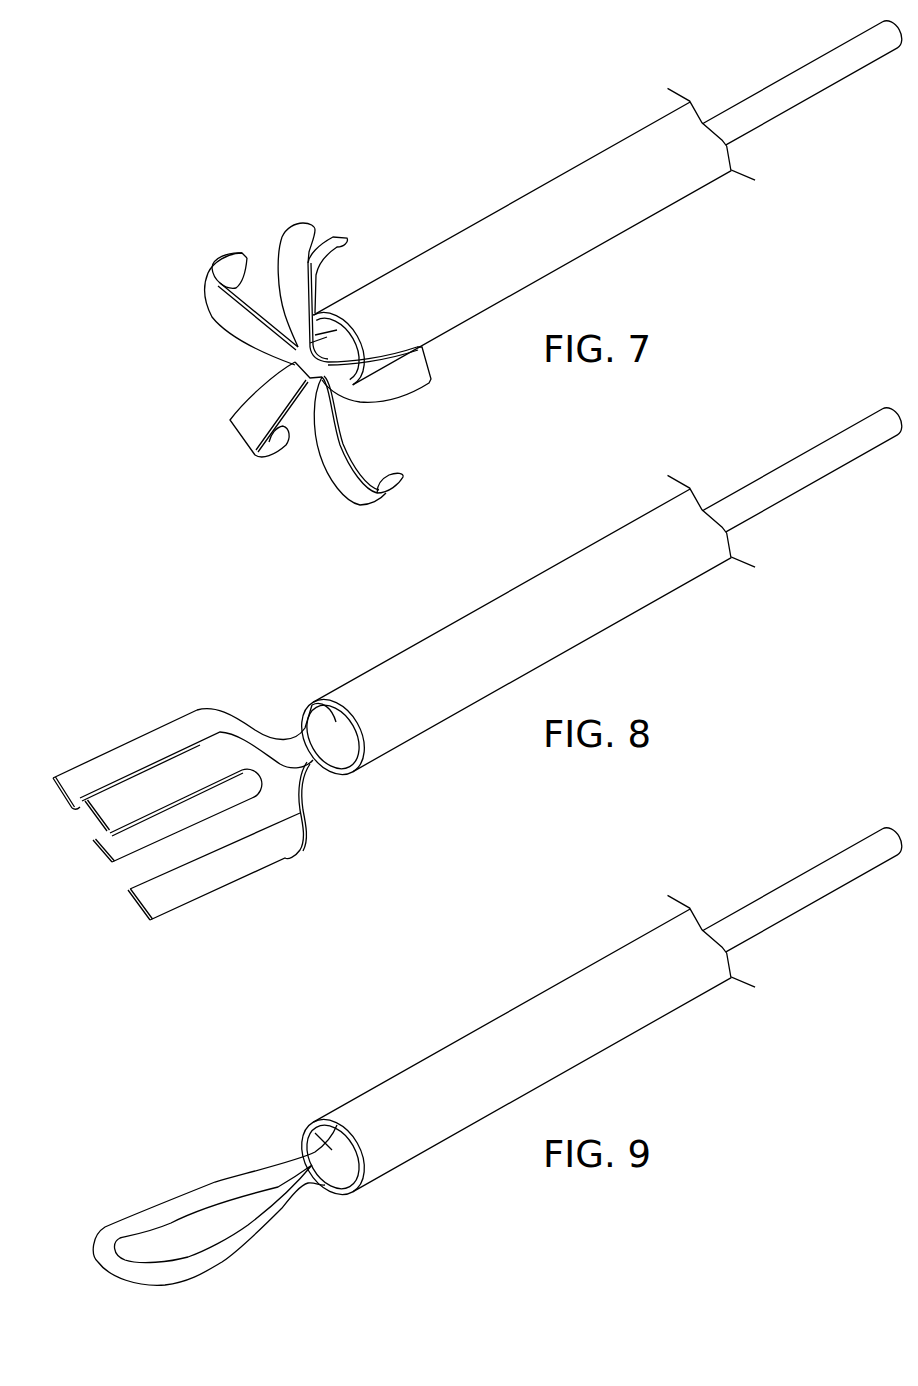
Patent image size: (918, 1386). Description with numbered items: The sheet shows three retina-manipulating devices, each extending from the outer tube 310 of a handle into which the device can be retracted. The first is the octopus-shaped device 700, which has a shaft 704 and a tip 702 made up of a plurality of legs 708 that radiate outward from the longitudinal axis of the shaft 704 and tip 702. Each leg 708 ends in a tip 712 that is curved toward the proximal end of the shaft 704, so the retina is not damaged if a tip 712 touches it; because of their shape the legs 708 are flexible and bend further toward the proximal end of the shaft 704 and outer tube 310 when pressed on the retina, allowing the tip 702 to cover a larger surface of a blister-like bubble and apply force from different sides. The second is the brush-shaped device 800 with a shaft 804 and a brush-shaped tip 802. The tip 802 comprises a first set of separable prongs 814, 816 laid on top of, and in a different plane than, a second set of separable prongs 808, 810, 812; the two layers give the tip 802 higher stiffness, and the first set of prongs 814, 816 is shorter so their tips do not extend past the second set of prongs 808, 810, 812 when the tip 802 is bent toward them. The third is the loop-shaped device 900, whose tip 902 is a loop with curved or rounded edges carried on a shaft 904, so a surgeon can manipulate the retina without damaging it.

In FIG. 7, the outer tube 310 is at (462, 245).
In FIG. 8, the outer tube 310 is at (462, 633).
In FIG. 9, the outer tube 310 is at (462, 1052).
In FIG. 7, the shaft 704 is at (738, 101).
In FIG. 7, the tip 702 is at (263, 220).
In FIG. 7, the device 700 is at (308, 364).
In FIG. 7, the legs 708 is at (305, 240).
In FIG. 7, the tip (of leg) 712 is at (333, 230).
In FIG. 8, the shaft 804 is at (738, 488).
In FIG. 8, the brush-shaped tip 802 is at (178, 773).
In FIG. 8, the device 800 is at (330, 727).
In FIG. 8, the separable prong (second set) 808 is at (67, 787).
In FIG. 8, the separable prong (second set) 810 is at (107, 847).
In FIG. 8, the separable prong (second set) 812 is at (143, 902).
In FIG. 8, the separable prong (first set) 814 is at (137, 787).
In FIG. 8, the separable prong (first set) 816 is at (187, 853).
In FIG. 9, the shaft 904 is at (738, 908).
In FIG. 9, the tip 902 is at (215, 1183).
In FIG. 9, the device 900 is at (315, 1133).